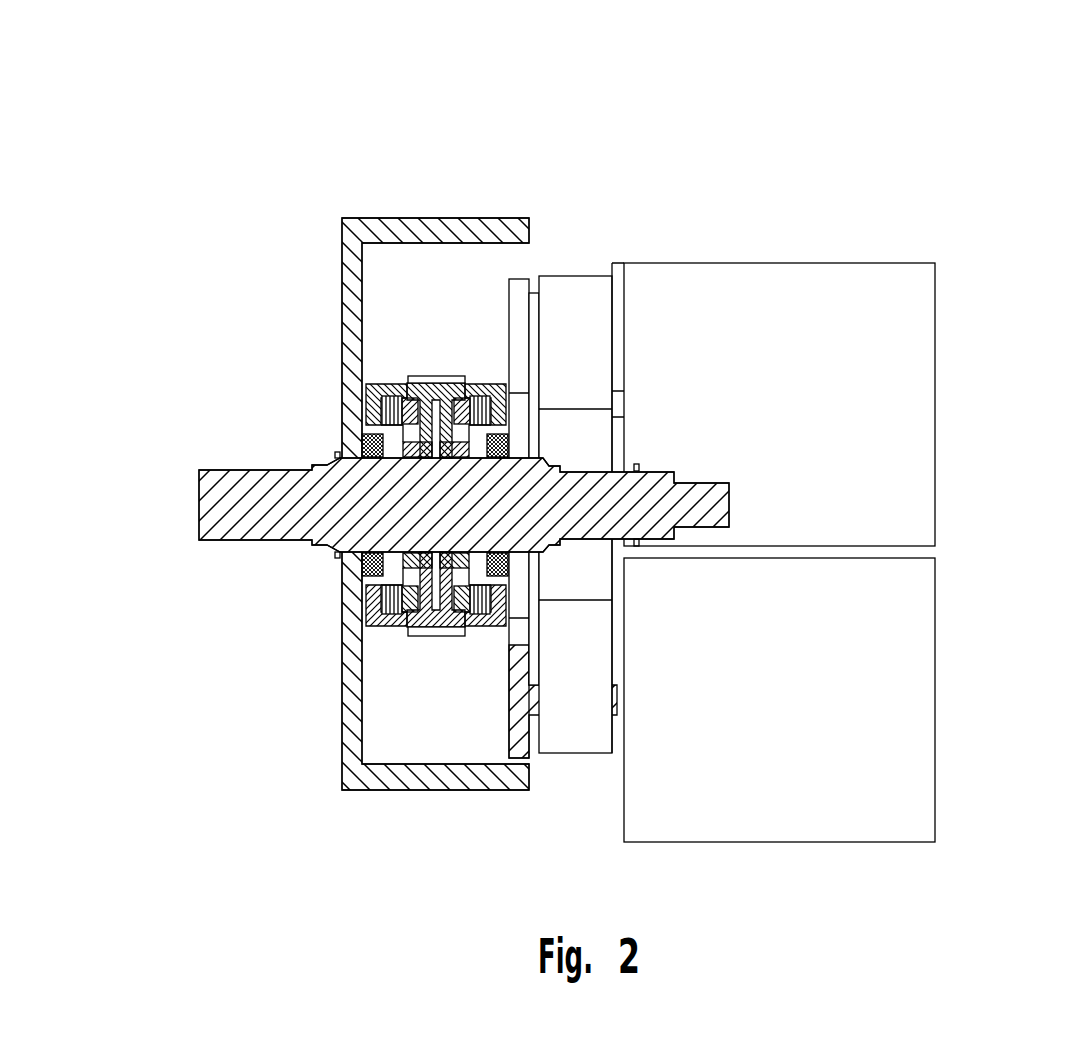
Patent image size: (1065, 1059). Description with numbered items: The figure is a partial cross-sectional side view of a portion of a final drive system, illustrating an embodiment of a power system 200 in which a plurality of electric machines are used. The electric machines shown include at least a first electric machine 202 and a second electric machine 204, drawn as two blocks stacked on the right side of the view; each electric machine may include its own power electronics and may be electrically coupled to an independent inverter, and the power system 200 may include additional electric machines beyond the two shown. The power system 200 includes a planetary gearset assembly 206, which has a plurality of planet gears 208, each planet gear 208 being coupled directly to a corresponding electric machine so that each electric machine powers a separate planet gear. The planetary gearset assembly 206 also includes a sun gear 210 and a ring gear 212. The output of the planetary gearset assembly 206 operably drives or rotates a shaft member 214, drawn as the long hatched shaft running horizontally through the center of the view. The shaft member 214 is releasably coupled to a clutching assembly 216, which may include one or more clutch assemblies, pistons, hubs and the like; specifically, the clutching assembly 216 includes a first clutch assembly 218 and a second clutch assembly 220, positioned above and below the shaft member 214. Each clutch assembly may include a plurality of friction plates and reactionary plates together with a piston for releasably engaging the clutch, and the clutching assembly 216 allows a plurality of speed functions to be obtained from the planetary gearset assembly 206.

The power system 200 is at (873, 184).
The first electric machine 202 is at (906, 372).
The second electric machine 204 is at (906, 692).
The planetary gearset assembly 206 is at (530, 197).
The planet gear 208 is at (579, 283).
The sun gear 210 is at (520, 598).
The ring gear 212 is at (433, 218).
The shaft member 214 is at (197, 489).
The clutching assembly 216 is at (410, 367).
The first clutch assembly 218 is at (369, 393).
The second clutch assembly 220 is at (343, 566).